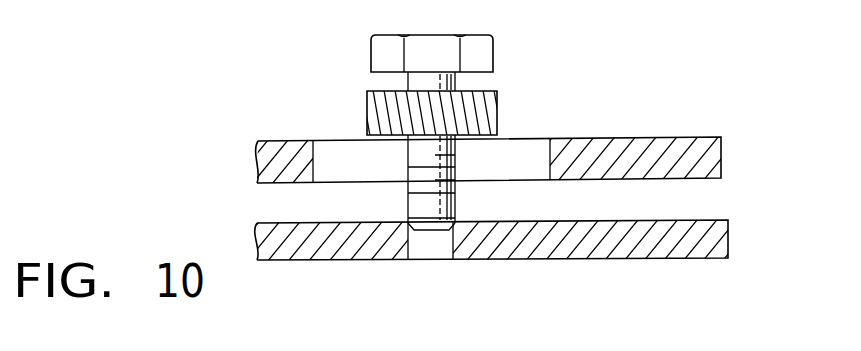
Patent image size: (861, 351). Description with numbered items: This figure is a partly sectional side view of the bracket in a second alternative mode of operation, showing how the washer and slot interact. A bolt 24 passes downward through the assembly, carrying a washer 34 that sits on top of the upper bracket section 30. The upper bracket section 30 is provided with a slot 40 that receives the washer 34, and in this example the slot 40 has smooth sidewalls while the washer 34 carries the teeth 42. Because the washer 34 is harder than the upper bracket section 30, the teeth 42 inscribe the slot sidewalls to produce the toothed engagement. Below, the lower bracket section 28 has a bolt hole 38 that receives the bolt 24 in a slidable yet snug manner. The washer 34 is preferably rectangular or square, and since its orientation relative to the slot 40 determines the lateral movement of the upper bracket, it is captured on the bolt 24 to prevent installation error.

The bolt 24 is at (480, 41).
The teeth 42 is at (478, 100).
The washer 34 is at (370, 115).
The upper bracket section 30 is at (680, 137).
The slot 40 is at (522, 153).
The lower bracket section 28 is at (705, 260).
The bolt hole 38 is at (450, 250).